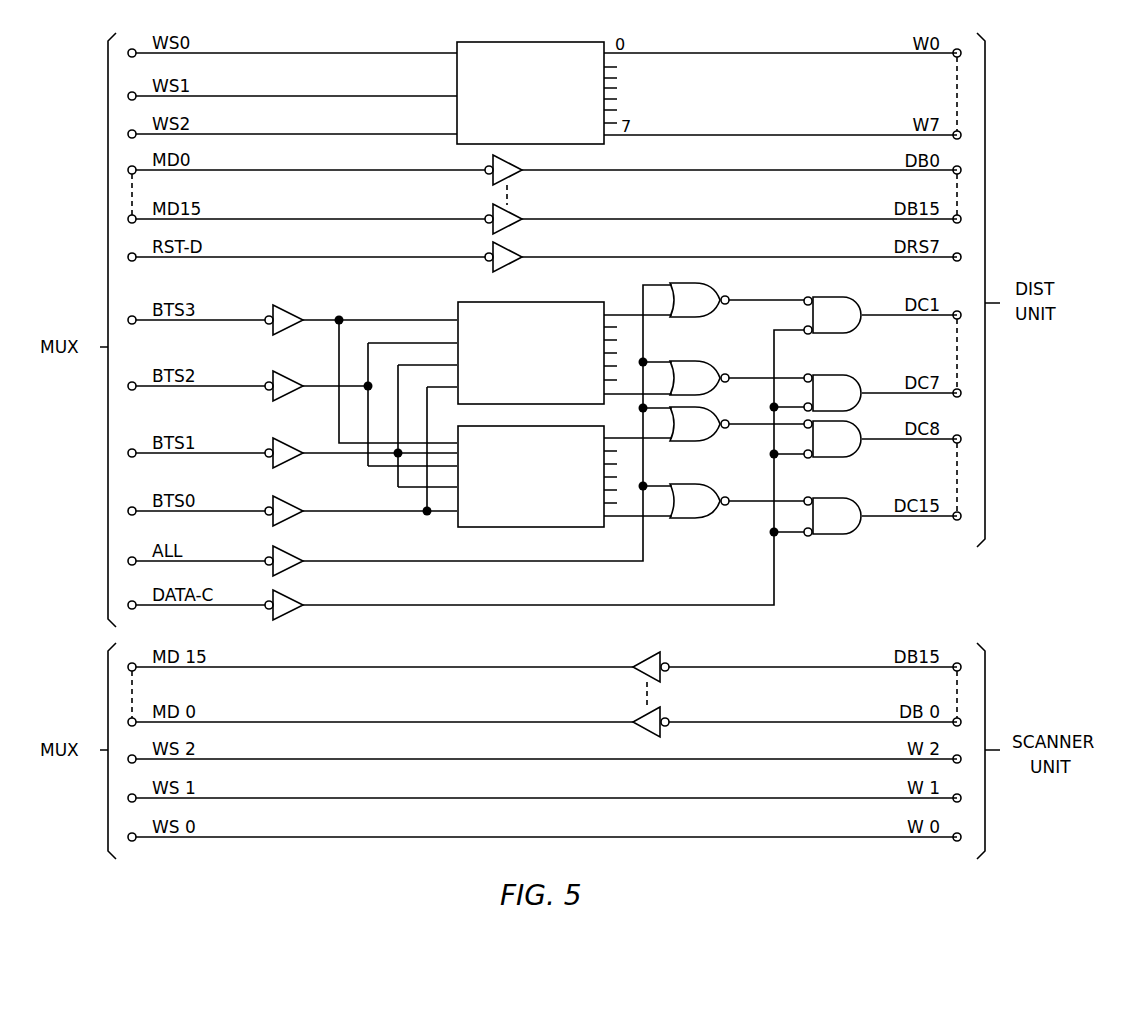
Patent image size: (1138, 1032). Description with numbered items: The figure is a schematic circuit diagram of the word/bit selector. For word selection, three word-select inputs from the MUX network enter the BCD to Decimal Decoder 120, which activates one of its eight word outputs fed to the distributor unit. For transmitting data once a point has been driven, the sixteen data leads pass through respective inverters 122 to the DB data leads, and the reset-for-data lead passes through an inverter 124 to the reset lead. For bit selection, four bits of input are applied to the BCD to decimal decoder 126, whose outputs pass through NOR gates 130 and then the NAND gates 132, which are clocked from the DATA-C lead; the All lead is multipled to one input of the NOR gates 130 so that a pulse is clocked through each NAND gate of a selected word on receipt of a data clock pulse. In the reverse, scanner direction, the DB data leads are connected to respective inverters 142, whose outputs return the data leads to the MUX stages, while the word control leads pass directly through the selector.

The BCD to Decimal Decoder 120 is at (520, 43).
The inverters 122 is at (520, 170).
The inverter 124 is at (520, 257).
The BCD to decimal decoder 126 is at (520, 304).
The NOR gates 130 is at (713, 291).
The NAND gates 132 is at (843, 298).
The inverters 142 is at (645, 660).